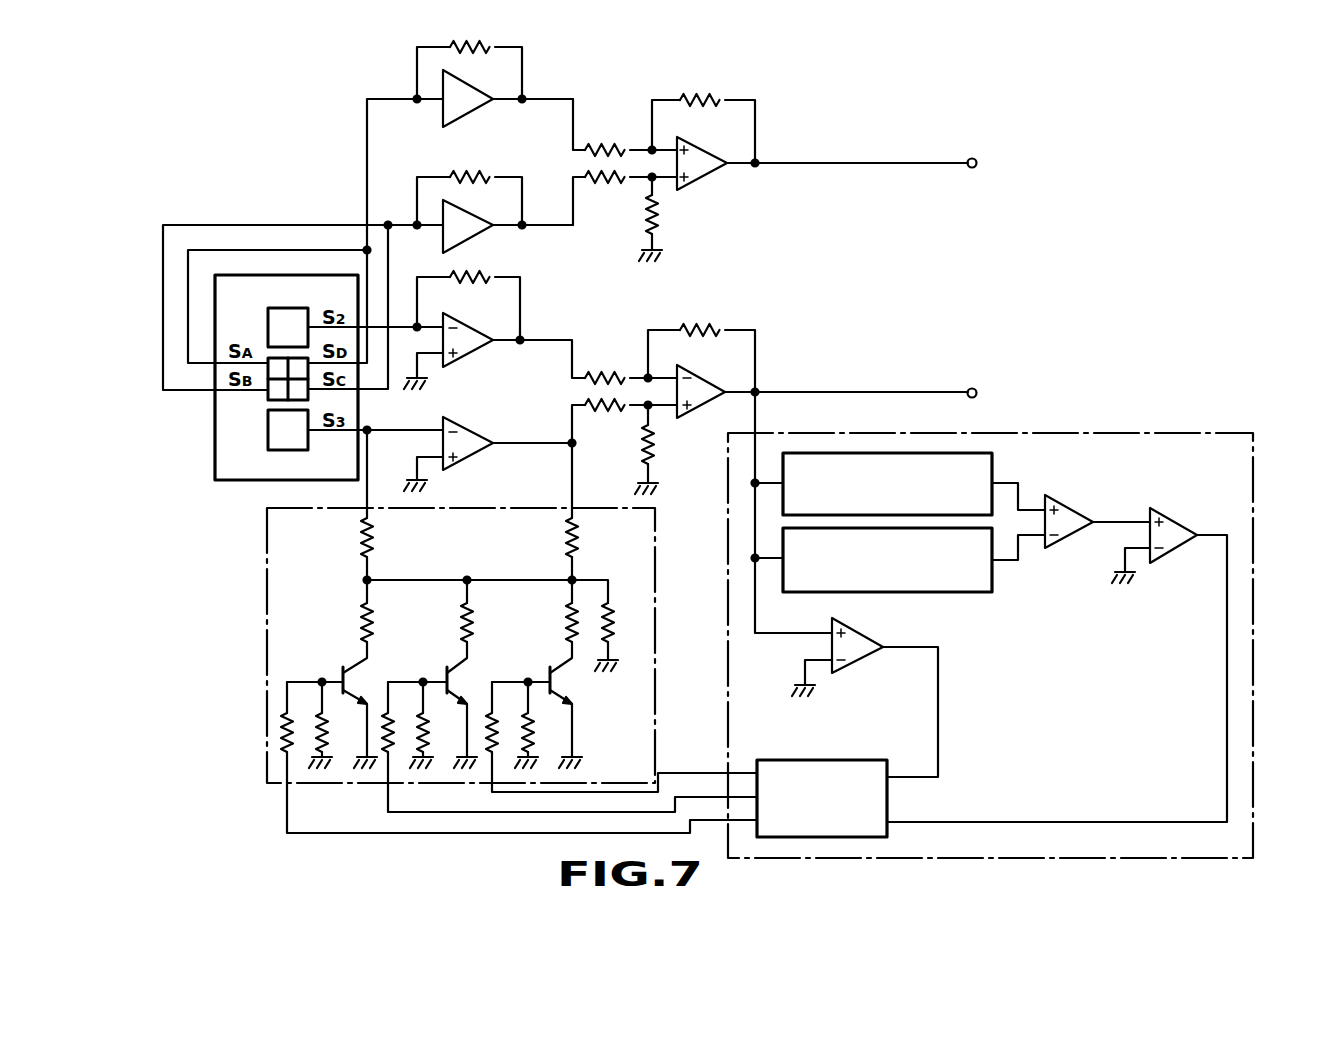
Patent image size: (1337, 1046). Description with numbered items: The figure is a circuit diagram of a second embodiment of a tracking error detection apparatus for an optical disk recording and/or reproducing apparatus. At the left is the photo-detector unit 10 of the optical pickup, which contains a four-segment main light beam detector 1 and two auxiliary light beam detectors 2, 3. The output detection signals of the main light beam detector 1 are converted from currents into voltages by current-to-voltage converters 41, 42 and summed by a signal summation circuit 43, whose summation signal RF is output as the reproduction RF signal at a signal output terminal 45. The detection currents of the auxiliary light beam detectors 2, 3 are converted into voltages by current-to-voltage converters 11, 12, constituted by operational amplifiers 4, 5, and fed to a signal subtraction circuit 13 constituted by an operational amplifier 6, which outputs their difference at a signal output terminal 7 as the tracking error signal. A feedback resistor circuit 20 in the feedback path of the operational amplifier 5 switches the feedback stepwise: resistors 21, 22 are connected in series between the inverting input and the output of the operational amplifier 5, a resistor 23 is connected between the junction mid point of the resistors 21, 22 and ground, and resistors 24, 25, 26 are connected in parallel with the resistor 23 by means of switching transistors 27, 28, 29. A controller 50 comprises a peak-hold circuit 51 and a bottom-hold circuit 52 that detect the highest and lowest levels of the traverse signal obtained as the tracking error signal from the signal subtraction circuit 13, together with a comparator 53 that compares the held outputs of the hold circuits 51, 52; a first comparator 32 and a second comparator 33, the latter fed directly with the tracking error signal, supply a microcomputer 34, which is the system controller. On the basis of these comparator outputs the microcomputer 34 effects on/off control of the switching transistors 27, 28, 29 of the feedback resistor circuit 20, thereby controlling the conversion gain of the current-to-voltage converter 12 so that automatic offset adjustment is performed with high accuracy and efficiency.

The main light beam detector 1 is at (268, 395).
The auxiliary light beam detector 2 is at (268, 318).
The auxiliary light beam detector 3 is at (268, 440).
The operational amplifier 4 is at (466, 352).
The operational amplifier 5 is at (470, 427).
The operational amplifier 6 is at (700, 412).
The signal output terminal 7 is at (970, 388).
The photo-detector unit 10 is at (213, 440).
The current-to-voltage converter 11 is at (510, 319).
The current-to-voltage converter 12 is at (520, 492).
The signal subtraction circuit 13 is at (740, 374).
The feedback resistor circuit 20 is at (267, 663).
The resistor 21 is at (371, 546).
The resistor 22 is at (566, 545).
The resistor 23 is at (612, 616).
The resistor 24 is at (371, 617).
The resistor 25 is at (470, 620).
The resistor 26 is at (570, 620).
The switching transistor 27 is at (343, 680).
The switching transistor 28 is at (447, 680).
The switching transistor 29 is at (550, 680).
The first comparator 32 is at (1172, 552).
The second comparator 33 is at (857, 665).
The microcomputer 34 is at (820, 760).
The current-to-voltage converter 41 is at (511, 81).
The current-to-voltage converter 42 is at (511, 207).
The signal summation circuit 43 is at (741, 137).
The signal output terminal 45 is at (972, 158).
The controller 50 is at (1256, 688).
The peak-hold circuit 51 is at (993, 466).
The bottom-hold circuit 52 is at (993, 582).
The comparator 53 is at (1068, 501).